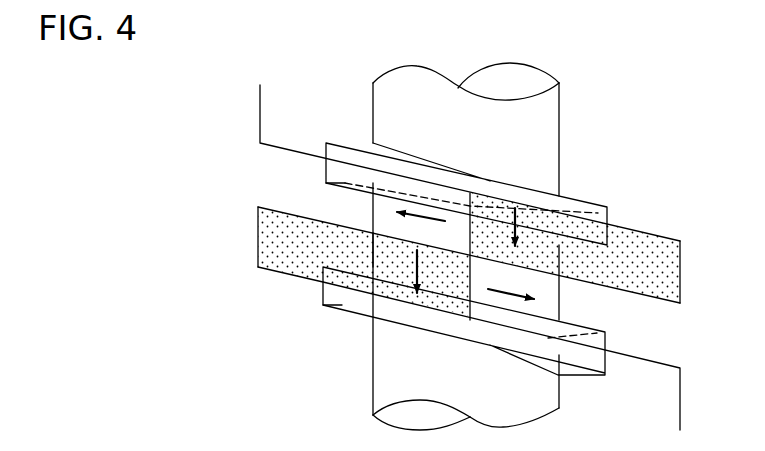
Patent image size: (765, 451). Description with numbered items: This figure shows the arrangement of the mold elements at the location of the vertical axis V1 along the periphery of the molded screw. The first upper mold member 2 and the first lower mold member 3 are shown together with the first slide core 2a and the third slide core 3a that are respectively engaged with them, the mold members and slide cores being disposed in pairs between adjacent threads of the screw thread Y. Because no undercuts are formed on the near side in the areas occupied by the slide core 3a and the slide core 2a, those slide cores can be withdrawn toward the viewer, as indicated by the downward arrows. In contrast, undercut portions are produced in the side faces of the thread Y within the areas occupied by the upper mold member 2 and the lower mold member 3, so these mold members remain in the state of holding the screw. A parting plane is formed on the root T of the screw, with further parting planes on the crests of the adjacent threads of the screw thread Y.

The first upper mold member 2 is at (658, 348).
The first slide core 2a is at (654, 277).
The first lower mold member 3 is at (317, 203).
The third slide core 3a is at (327, 263).
The screw thread Y is at (326, 148).
The root of the screw T is at (558, 300).
The vertical axis V1 is at (466, 230).